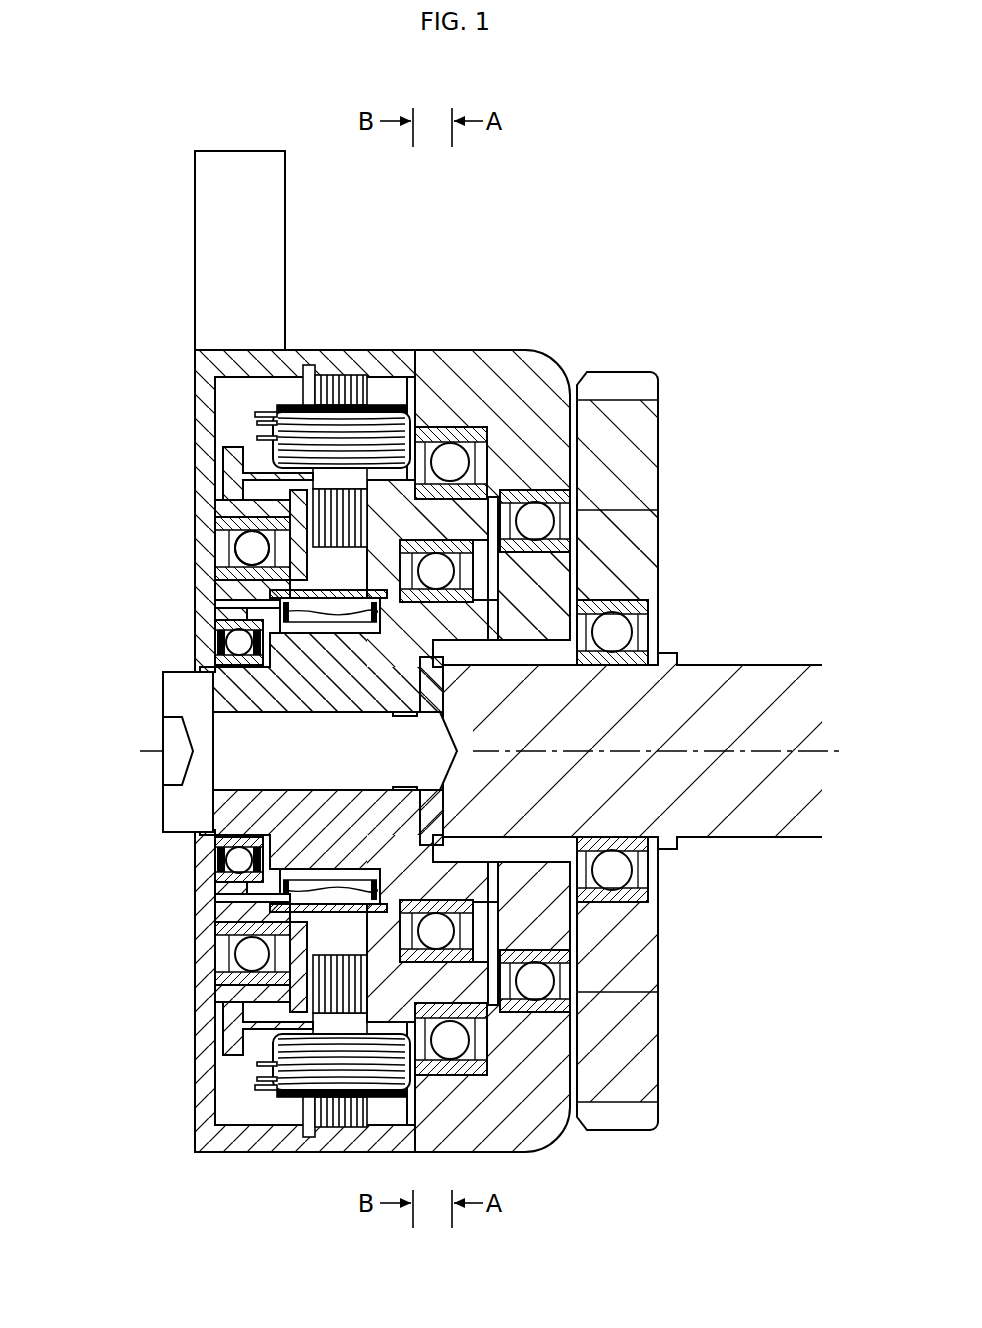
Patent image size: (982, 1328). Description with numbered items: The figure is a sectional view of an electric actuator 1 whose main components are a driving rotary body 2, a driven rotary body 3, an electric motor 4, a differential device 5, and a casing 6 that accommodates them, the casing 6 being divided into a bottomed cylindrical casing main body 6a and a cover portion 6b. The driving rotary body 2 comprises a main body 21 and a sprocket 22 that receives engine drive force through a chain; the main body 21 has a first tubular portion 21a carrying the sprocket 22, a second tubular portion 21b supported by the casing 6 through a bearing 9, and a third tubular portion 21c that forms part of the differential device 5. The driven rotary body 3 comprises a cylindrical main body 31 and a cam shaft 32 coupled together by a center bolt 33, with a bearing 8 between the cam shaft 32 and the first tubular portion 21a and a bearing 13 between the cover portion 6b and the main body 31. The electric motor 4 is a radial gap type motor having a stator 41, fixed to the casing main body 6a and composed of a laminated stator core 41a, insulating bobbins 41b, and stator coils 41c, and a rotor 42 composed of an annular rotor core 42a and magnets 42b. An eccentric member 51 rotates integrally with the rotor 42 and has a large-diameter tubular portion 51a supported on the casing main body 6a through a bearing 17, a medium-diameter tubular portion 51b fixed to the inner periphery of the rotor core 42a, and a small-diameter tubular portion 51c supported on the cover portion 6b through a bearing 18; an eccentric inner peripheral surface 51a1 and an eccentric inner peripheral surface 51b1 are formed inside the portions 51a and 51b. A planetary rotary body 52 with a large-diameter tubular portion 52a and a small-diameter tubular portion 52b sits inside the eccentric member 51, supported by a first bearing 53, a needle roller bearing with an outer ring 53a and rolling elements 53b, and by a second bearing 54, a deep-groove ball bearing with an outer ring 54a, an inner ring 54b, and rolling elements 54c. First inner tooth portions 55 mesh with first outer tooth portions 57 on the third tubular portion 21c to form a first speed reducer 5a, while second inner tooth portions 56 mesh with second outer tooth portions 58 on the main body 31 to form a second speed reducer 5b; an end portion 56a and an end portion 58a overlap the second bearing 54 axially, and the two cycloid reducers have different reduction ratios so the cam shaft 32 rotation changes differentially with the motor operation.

The electric actuator 1 is at (692, 281).
The driving rotary body 2 is at (673, 751).
The driven rotary body 3 is at (632, 733).
The electric motor 4 is at (246, 413).
The differential device 5 is at (335, 668).
The first speed reducer 5a is at (470, 823).
The second speed reducer 5b is at (224, 644).
The casing 6 is at (382, 1037).
The casing main body 6a is at (331, 1140).
The cover portion 6b is at (330, 1208).
The bearing 8 is at (650, 626).
The bearing 9 is at (536, 489).
The bearing 13 is at (222, 862).
The bearing 17 is at (501, 1046).
The bearing 18 is at (222, 955).
The main body 21 is at (657, 806).
The first tubular portion 21a is at (623, 566).
The second tubular portion 21b is at (565, 690).
The third tubular portion 21c is at (432, 700).
The sprocket 22 is at (661, 437).
The main body 31 is at (200, 822).
The cam shaft 32 is at (770, 815).
The center bolt 33 is at (149, 766).
The stator 41 is at (342, 402).
The stator core 41a is at (330, 385).
The bobbins 41b is at (380, 400).
The stator coils 41c is at (290, 304).
The rotor 42 is at (195, 475).
The rotor core 42a is at (262, 508).
The magnets 42b is at (236, 462).
The eccentric member 51 is at (177, 545).
The large-diameter tubular portion 51a is at (256, 522).
The eccentric inner peripheral surface 51a1 is at (452, 500).
The medium-diameter tubular portion 51b is at (250, 548).
The eccentric inner peripheral surface 51b1 is at (228, 616).
The small-diameter tubular portion 51c is at (262, 576).
The planetary rotary body 52 is at (395, 529).
The large-diameter tubular portion 52a is at (478, 520).
The small-diameter tubular portion 52b is at (348, 672).
The first bearing 53 is at (210, 960).
The outer ring 53a is at (300, 1000).
The rolling elements 53b is at (290, 905).
The second bearing 54 is at (464, 932).
The outer ring 54a is at (560, 1012).
The inner ring 54b is at (560, 903).
The rolling elements 54c is at (565, 933).
The first inner tooth portions 55 is at (452, 858).
The second inner tooth portions 56 is at (330, 612).
The end portion 56a is at (483, 688).
The first outer tooth portions 57 is at (500, 868).
The second outer tooth portions 58 is at (222, 645).
The end portion 58a is at (345, 672).